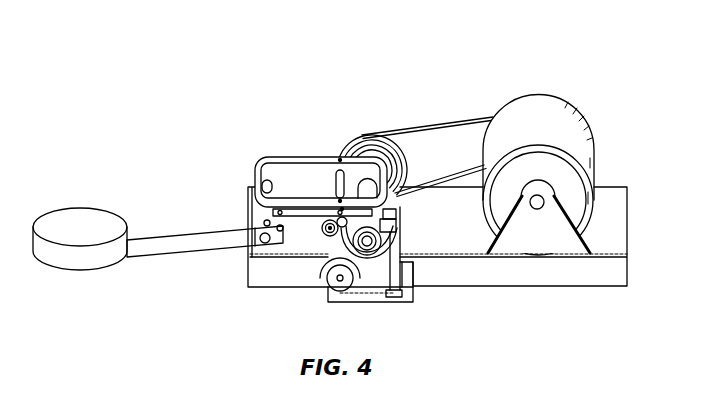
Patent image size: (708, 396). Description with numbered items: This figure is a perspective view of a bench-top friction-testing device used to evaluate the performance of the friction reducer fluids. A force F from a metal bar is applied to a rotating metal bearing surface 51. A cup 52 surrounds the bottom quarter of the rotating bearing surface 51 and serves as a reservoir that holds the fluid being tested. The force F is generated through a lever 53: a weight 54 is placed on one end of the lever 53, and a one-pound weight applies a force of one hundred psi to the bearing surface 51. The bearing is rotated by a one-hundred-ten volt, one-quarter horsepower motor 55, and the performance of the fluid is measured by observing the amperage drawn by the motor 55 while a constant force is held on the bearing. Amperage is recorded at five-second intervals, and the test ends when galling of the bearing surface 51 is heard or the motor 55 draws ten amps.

The force F is at (397, 224).
The rotating metal bearing surface 51 is at (399, 227).
The cup 52 is at (398, 226).
The lever 53 is at (190, 252).
The weight 54 is at (80, 229).
The motor 55 is at (544, 107).